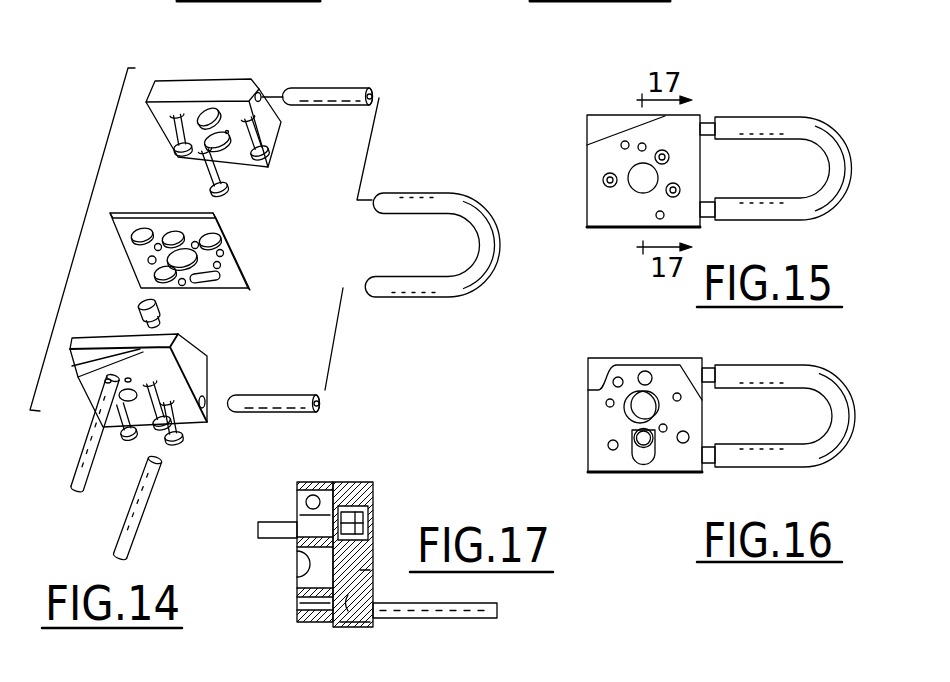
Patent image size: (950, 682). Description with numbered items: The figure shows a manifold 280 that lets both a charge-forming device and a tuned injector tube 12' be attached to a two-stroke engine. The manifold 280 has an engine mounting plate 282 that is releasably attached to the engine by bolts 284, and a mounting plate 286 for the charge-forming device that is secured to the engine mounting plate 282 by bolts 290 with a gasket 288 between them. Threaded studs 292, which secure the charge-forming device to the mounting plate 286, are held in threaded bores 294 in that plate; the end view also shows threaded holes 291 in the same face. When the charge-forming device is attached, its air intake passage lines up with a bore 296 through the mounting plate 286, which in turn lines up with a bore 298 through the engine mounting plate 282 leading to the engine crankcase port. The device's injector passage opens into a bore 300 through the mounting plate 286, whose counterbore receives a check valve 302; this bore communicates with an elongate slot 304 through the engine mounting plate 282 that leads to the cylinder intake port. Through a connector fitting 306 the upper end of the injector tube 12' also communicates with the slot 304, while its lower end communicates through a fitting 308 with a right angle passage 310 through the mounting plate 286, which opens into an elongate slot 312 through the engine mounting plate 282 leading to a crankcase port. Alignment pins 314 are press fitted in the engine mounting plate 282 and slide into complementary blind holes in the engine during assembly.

In FIG. 14, the tuned injector tube 12' is at (432, 222).
In FIG. 15, the tuned injector tube 12' is at (788, 147).
In FIG. 16, the tuned injector tube 12' is at (787, 395).
In FIG. 14, the manifold 280 is at (84, 219).
In FIG. 15, the manifold 280 is at (590, 103).
In FIG. 14, the engine mounting plate 282 is at (152, 78).
In FIG. 16, the engine mounting plate 282 is at (612, 358).
In FIG. 17, the engine mounting plate 282 is at (320, 482).
In FIG. 14, the bolts 284 is at (170, 152).
In FIG. 14, the mounting plate 286 is at (73, 337).
In FIG. 15, the mounting plate 286 is at (585, 210).
In FIG. 17, the mounting plate 286 is at (353, 482).
In FIG. 14, the gasket 288 is at (221, 221).
In FIG. 14, the bolts 290 is at (171, 440).
In FIG. 15, the threaded holes 291 is at (602, 183).
In FIG. 14, the threaded studs 292 is at (127, 517).
In FIG. 17, the threaded studs 292 is at (494, 610).
In FIG. 15, the threaded bores 294 is at (620, 145).
In FIG. 14, the bore 296 is at (116, 431).
In FIG. 17, the bore 296 is at (367, 575).
In FIG. 14, the bore 298 is at (217, 133).
In FIG. 16, the bore 298 is at (637, 407).
In FIG. 17, the bore 298 is at (300, 573).
In FIG. 14, the bore 300 is at (105, 388).
In FIG. 15, the bore 300 is at (646, 146).
In FIG. 17, the bore 300 is at (368, 512).
In FIG. 14, the check valve 302 is at (165, 307).
In FIG. 16, the check valve 302 is at (633, 450).
In FIG. 17, the check valve 302 is at (364, 507).
In FIG. 14, the elongate slot 304 is at (208, 109).
In FIG. 16, the elongate slot 304 is at (647, 462).
In FIG. 17, the elongate slot 304 is at (301, 512).
In FIG. 14, the connector fitting 306 is at (320, 88).
In FIG. 15, the connector fitting 306 is at (710, 122).
In FIG. 17, the connector fitting 306 is at (305, 498).
In FIG. 14, the fitting 308 is at (267, 395).
In FIG. 15, the fitting 308 is at (704, 218).
In FIG. 16, the fitting 308 is at (708, 362).
In FIG. 14, the right angle passage 310 is at (205, 398).
In FIG. 17, the right angle passage 310 is at (374, 630).
In FIG. 16, the elongate slot 312 is at (645, 371).
In FIG. 17, the elongate slot 312 is at (303, 603).
In FIG. 16, the alignment pins 314 is at (668, 428).
In FIG. 17, the alignment pins 314 is at (275, 533).